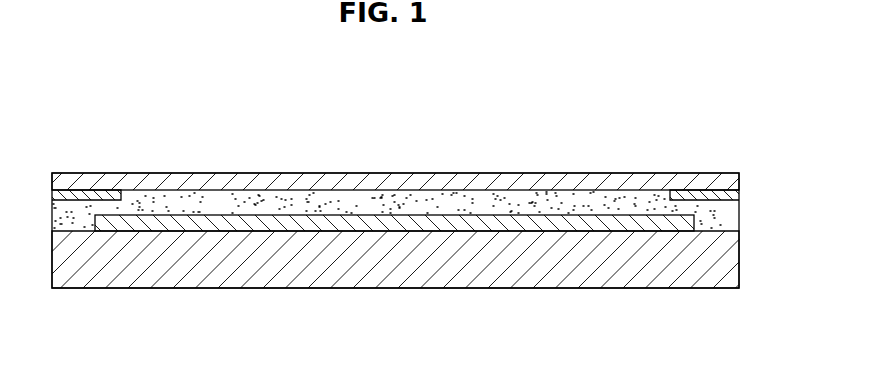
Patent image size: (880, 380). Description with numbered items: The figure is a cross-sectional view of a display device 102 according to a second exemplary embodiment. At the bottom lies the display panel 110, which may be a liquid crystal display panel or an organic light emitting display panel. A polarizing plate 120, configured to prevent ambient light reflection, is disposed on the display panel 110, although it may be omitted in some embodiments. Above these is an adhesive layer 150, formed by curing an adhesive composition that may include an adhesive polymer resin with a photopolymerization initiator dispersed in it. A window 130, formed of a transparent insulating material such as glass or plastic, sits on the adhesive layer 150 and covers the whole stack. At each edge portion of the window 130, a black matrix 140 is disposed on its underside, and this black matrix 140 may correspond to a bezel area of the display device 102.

The display device 102 is at (64, 86).
The display panel 110 is at (455, 258).
The polarizing plate 120 is at (307, 223).
The window 130 is at (353, 182).
The black matrix 140 is at (84, 193).
The adhesive layer 150 is at (450, 208).